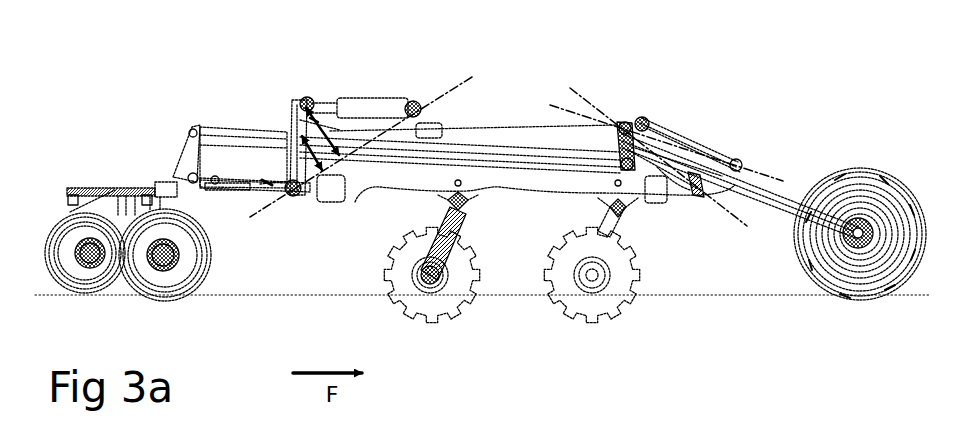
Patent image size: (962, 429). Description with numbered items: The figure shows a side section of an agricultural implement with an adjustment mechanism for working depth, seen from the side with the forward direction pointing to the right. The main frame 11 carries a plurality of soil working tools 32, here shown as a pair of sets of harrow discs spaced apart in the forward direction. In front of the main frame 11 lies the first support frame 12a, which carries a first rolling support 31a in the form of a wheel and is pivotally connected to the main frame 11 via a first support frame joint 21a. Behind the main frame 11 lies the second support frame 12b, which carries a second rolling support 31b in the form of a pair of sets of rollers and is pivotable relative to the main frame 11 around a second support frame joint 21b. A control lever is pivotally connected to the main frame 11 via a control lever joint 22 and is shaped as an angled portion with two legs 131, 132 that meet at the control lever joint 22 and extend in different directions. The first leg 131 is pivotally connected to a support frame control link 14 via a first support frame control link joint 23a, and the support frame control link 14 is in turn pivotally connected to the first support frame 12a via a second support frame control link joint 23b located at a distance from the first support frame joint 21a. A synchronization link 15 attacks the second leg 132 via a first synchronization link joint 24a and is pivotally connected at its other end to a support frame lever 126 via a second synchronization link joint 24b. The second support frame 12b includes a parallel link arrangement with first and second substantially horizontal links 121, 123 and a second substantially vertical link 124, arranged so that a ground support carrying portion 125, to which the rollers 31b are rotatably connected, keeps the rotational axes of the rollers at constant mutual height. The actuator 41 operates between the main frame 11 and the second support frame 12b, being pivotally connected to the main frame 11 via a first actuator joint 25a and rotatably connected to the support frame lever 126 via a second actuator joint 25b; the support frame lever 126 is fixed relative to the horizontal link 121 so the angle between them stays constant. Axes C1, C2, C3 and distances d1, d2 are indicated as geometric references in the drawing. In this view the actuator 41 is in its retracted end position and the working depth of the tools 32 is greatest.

The second support frame 12b is at (137, 114).
The second substantially horizontal link 123 is at (230, 132).
The second synchronization link joint 24b is at (297, 133).
The second actuator joint 25b is at (307, 105).
The second substantially vertical link 124 is at (188, 165).
The ground support carrying portion 125 is at (127, 190).
The actuator 41 is at (358, 108).
The first actuator joint 25a is at (414, 107).
The axis C3 is at (453, 87).
The main frame 11 is at (475, 138).
The second leg 132 is at (615, 145).
The control lever joint 22 is at (620, 130).
The first leg 131 is at (625, 125).
The first support frame control link joint 23a is at (640, 122).
The support frame control link 14 is at (688, 150).
The second support frame control link joint 23b is at (737, 162).
The axis C1 is at (755, 172).
The axis C2 is at (737, 217).
The distance d1 is at (348, 165).
The distance d2 is at (328, 185).
The second rolling support 31b is at (103, 282).
The first substantially horizontal link 121 is at (247, 190).
The second support frame joint 21b is at (295, 188).
The support frame lever 126 is at (305, 200).
The soil working tools 32 is at (437, 303).
The synchronization link 15 is at (515, 150).
The first synchronization link joint 24a is at (631, 155).
The first support frame joint 21a is at (694, 172).
The first support frame 12a is at (766, 200).
The first rolling support 31a is at (888, 280).